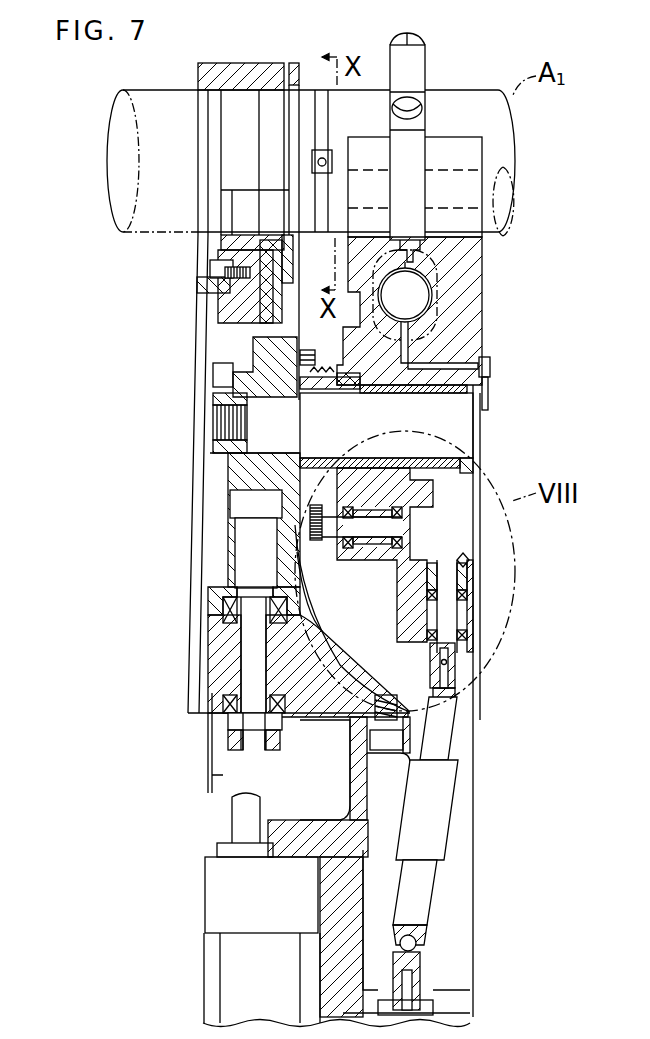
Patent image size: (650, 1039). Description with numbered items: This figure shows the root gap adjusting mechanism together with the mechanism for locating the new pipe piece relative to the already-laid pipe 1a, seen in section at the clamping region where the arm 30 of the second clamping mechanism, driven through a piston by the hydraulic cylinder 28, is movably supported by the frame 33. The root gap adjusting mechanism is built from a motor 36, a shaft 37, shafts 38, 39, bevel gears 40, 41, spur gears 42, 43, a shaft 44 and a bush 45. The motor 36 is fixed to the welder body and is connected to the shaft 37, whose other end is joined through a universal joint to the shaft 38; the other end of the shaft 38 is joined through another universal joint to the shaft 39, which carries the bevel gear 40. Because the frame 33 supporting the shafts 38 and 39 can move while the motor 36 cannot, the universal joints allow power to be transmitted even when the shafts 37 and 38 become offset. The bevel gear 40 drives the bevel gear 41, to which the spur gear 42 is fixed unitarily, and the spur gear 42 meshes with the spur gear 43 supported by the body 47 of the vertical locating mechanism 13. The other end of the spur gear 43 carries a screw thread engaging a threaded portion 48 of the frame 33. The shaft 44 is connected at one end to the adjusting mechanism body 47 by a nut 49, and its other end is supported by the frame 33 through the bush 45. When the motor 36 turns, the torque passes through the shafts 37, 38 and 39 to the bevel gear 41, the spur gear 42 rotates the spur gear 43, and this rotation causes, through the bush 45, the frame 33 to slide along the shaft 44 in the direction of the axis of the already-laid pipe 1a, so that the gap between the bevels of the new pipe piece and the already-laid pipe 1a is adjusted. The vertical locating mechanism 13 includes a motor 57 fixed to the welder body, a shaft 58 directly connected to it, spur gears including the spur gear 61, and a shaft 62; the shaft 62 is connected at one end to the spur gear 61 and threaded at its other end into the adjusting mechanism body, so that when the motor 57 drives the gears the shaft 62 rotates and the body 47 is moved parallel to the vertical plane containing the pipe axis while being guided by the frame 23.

The already-laid pipe 1a is at (148, 234).
The arm 30 is at (426, 63).
The hydraulic cylinder 28 is at (426, 292).
The frame 23 is at (217, 330).
The adjusting mechanism body 47 is at (262, 352).
The vertical locating mechanism 13 is at (233, 377).
The nut 49 is at (247, 395).
The bush 45 is at (485, 404).
The shaft 44 is at (460, 425).
The frame 33 is at (440, 457).
The spur gear 43 is at (333, 492).
The threaded portion 48 is at (327, 530).
The spur gear 42 is at (302, 560).
The bevel gear 41 is at (430, 531).
The bevel gear 40 is at (466, 571).
The shaft 39 is at (456, 673).
The shaft 62 is at (248, 659).
The spur gear 61 is at (233, 752).
The shaft 58 is at (232, 820).
The motor 57 is at (228, 977).
The shaft 38 is at (444, 812).
The shaft 37 is at (423, 963).
The motor 36 is at (455, 1021).